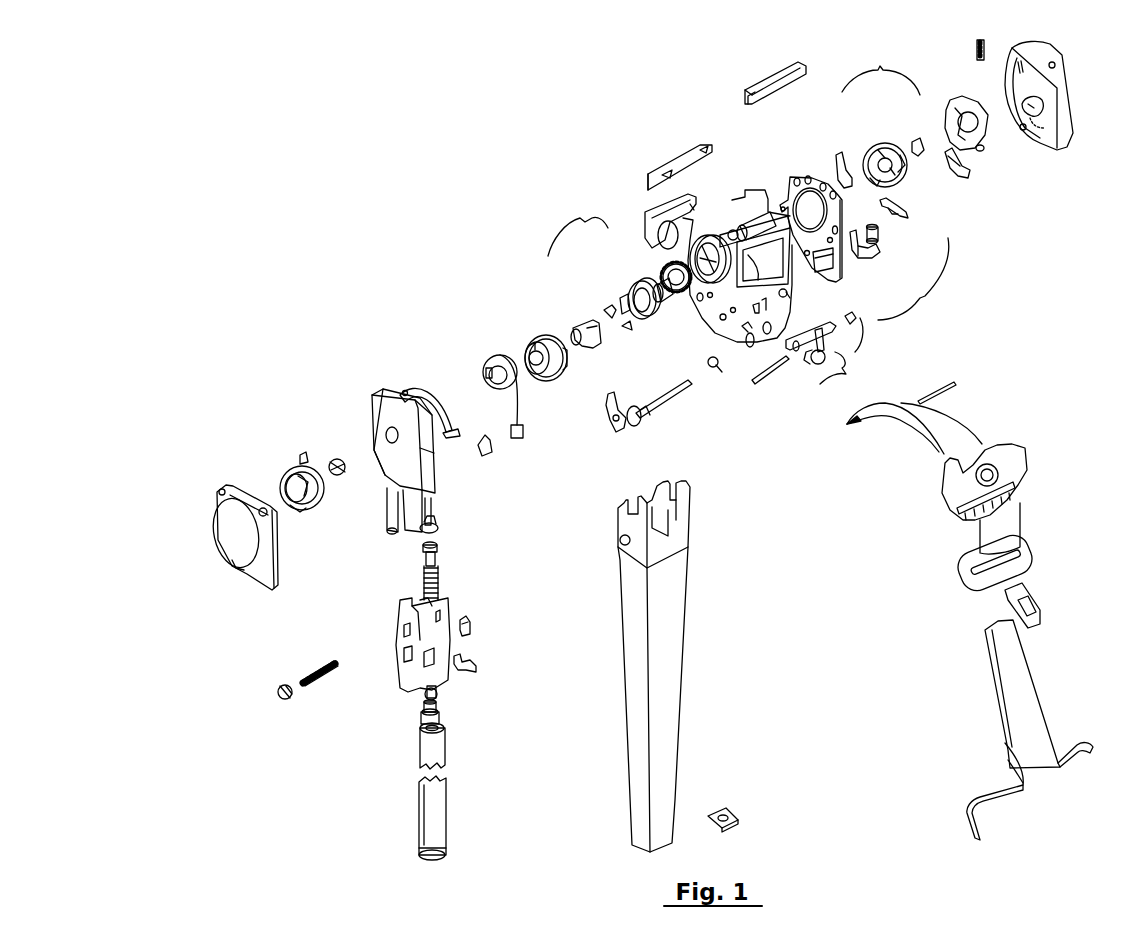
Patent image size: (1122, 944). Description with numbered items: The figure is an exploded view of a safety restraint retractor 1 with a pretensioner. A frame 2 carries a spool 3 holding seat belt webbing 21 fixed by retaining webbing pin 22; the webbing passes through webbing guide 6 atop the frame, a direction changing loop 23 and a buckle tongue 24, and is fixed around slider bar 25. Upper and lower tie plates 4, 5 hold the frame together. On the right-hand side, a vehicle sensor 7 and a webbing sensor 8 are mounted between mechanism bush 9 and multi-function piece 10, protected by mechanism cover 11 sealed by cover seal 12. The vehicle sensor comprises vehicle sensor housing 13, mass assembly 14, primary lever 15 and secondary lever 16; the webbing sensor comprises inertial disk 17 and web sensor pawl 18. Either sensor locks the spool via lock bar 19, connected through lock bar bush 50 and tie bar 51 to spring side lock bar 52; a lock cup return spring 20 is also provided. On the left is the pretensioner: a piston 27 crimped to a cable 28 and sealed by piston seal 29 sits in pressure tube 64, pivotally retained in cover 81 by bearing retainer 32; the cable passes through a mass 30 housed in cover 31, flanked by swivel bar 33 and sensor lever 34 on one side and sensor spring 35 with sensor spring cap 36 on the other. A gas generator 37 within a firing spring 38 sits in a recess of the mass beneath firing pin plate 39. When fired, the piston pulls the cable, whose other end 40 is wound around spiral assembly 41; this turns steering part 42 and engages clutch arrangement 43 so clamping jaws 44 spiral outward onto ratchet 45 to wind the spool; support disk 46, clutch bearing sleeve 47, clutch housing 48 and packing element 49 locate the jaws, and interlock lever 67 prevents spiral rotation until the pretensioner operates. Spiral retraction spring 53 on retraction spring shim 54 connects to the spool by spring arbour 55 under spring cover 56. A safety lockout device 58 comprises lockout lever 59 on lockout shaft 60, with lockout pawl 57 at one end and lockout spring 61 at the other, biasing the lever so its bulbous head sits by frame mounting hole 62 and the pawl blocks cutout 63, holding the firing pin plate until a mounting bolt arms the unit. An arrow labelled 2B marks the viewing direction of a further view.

The retractor 1 is at (604, 168).
The frame 2 is at (420, 532).
The section view direction 2B is at (718, 657).
The spool 3 is at (767, 212).
The upper tie plate 4 is at (654, 168).
The lower tie plate 5 is at (650, 212).
The webbing guide 6 is at (762, 88).
The vehicle sensor 7 is at (913, 279).
The webbing sensor 8 is at (881, 67).
The mechanism bush 9 is at (838, 268).
The multi-function piece 10 is at (960, 100).
The mechanism cover 11 is at (1045, 44).
The cover seal 12 is at (1050, 130).
The vehicle sensor housing 13 is at (878, 258).
The mass assembly 14 is at (884, 238).
The primary lever 15 is at (902, 212).
The secondary lever 16 is at (968, 168).
The inertial disk 17 is at (876, 138).
The web sensor pawl 18 is at (918, 140).
The lock bar 19 is at (842, 160).
The lock cup return spring 20 is at (975, 40).
The seat belt webbing 21 is at (945, 416).
The retaining webbing pin 22 is at (956, 386).
The direction changing loop 23 is at (1030, 458).
The buckle tongue 24 is at (1040, 530).
The slider bar 25 is at (1046, 766).
The piston 27 is at (445, 713).
The cable 28 is at (420, 720).
The piston seal 29 is at (444, 693).
The mass 30 is at (400, 657).
The cover 31 is at (422, 681).
The bearing retainer 32 is at (726, 826).
The swivel bar 33 is at (474, 667).
The sensor lever 34 is at (472, 627).
The sensor spring 35 is at (316, 668).
The sensor spring cap 36 is at (274, 692).
The gas generator 37 is at (442, 552).
The firing spring 38 is at (440, 572).
The firing pin plate 39 is at (452, 522).
The other end of the cable 40 is at (492, 354).
The spiral assembly 41 is at (560, 383).
The steering part 42 is at (578, 324).
The clutch arrangement 43 is at (578, 224).
The clutch clamping jaws 44 is at (607, 306).
The ratchet 45 is at (661, 264).
The support disk 46 is at (634, 290).
The clutch bearing sleeve 47 is at (660, 288).
The clutch housing 48 is at (389, 398).
The packing element 49 is at (433, 401).
The lock bar bush 50 is at (716, 368).
The tie bar 51 is at (655, 406).
The spring side lock bar 52 is at (613, 424).
The spiral retraction spring 53 is at (288, 464).
The retraction spring shim 54 is at (304, 452).
The spring arbour 55 is at (338, 458).
The spring cover 56 is at (218, 486).
The lockout pawl 57 is at (790, 348).
The safety lockout device 58 is at (844, 354).
The lockout lever 59 is at (826, 356).
The lockout shaft 60 is at (765, 360).
The lockout spring 61 is at (847, 314).
The frame mounting hole 62 is at (744, 346).
The cutout 63 is at (720, 318).
The pressure tube 64 is at (428, 793).
The interlock lever 67 is at (487, 456).
The cover 81 is at (680, 725).